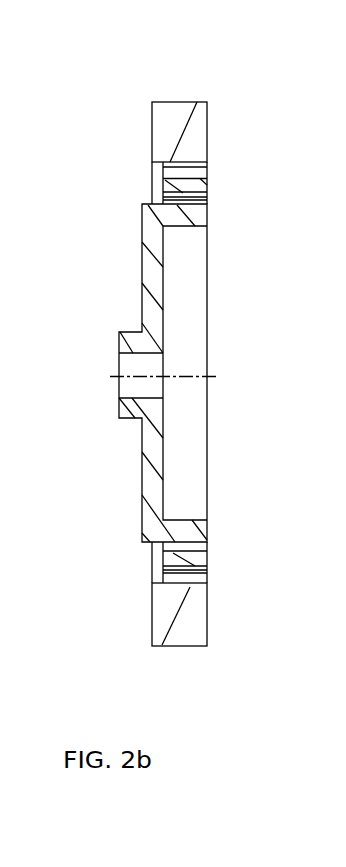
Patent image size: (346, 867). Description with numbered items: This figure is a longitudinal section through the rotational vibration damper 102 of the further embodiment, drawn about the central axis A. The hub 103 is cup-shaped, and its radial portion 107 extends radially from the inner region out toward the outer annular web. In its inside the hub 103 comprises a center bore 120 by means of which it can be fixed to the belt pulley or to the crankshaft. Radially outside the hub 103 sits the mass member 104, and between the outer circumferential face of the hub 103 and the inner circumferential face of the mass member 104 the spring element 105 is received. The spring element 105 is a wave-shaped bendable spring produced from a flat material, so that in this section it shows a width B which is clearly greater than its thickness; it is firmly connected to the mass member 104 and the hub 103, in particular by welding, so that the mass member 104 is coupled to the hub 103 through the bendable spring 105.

The rotational vibration damper 102 is at (82, 78).
The hub 103 is at (170, 460).
The mass member 104 is at (202, 125).
The spring element 105 is at (210, 183).
The radial portion 107 is at (157, 283).
The center bore 120 is at (143, 353).
The axis A is at (193, 377).
The width B is at (115, 562).